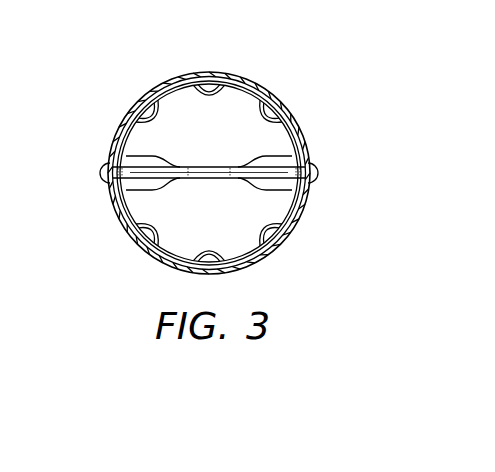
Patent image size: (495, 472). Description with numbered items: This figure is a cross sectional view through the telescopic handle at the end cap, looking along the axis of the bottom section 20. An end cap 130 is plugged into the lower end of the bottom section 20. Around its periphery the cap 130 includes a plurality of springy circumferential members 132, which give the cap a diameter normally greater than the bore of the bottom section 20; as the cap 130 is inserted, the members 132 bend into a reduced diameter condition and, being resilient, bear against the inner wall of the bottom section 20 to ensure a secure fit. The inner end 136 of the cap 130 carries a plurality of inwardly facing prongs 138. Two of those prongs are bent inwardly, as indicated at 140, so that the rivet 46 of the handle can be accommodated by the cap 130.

The bottom section 20 is at (296, 128).
The rivet 46 is at (318, 165).
The end cap 130 is at (227, 211).
The springy circumferential members 132 is at (284, 100).
The inner end 136 is at (124, 138).
The inwardly facing prongs 138 is at (264, 116).
The inwardly bent prongs 140 is at (244, 162).